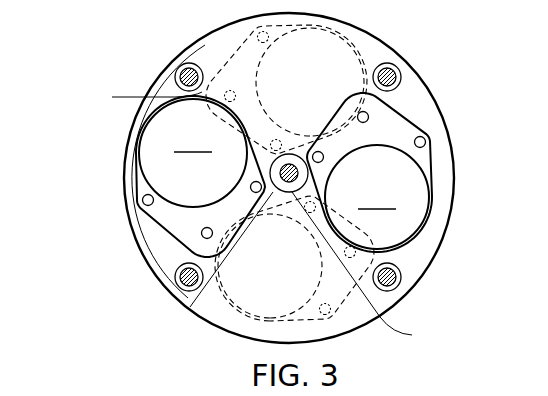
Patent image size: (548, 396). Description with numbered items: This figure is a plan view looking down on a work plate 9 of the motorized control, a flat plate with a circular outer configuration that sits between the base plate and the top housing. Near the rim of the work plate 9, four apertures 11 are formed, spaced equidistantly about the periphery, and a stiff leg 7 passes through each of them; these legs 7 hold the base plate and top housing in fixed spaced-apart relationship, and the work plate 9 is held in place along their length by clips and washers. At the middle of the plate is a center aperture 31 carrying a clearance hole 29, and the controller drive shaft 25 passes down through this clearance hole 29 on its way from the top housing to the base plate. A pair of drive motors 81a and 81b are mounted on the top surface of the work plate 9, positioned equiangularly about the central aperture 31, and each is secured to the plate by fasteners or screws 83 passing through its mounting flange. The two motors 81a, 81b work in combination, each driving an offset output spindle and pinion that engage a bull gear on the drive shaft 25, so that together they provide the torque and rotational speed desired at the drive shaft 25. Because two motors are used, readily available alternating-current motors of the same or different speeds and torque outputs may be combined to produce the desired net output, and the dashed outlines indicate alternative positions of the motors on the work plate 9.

The stiff legs 7 is at (180, 73).
The work plate 9 is at (204, 48).
The apertures 11 is at (143, 97).
The controller drive shaft 25 is at (292, 157).
The clearance hole 29 is at (369, 270).
The center aperture 31 is at (190, 307).
The drive motor 81a is at (219, 161).
The drive motor 81b is at (341, 189).
The fasteners or screws 83 is at (250, 187).